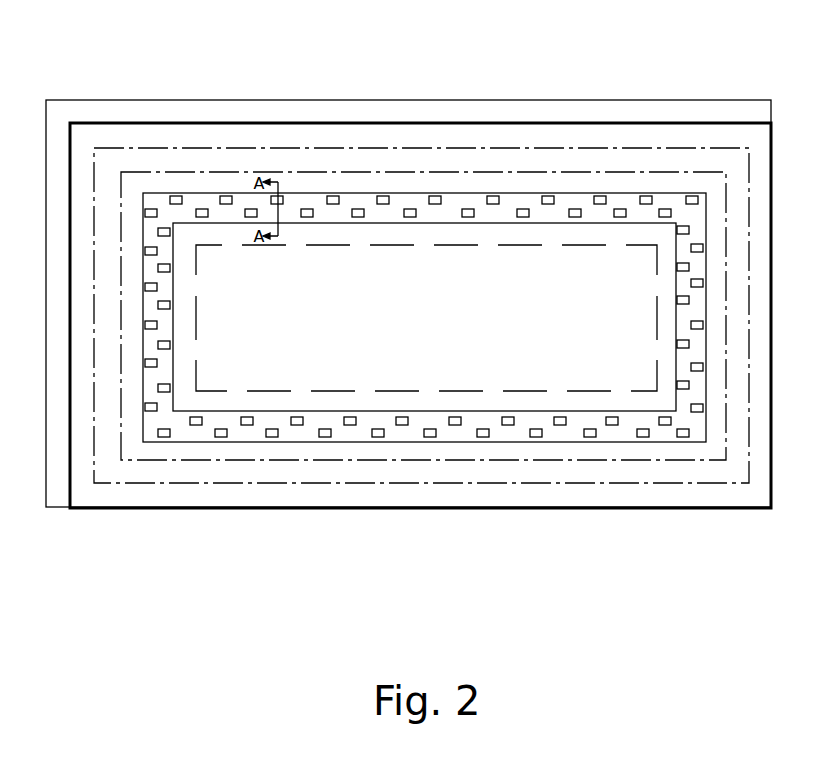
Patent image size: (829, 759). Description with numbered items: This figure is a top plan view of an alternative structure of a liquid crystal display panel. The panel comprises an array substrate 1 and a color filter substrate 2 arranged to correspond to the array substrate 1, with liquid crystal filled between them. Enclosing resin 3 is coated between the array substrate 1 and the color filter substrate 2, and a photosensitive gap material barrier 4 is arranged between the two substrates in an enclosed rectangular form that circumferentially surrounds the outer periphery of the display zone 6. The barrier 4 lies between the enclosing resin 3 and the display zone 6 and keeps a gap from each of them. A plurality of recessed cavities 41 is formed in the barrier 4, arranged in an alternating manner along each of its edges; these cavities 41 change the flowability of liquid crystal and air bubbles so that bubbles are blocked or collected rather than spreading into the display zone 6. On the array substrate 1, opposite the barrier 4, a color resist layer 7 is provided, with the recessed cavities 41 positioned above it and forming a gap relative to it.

The array substrate 1 is at (100, 113).
The color filter substrate 2 is at (171, 137).
The enclosing resin 3 is at (233, 158).
The photosensitive gap material barrier 4 is at (680, 213).
The recessed cavities 41 is at (600, 202).
The display zone 6 is at (290, 325).
The color resist layer 7 is at (695, 440).